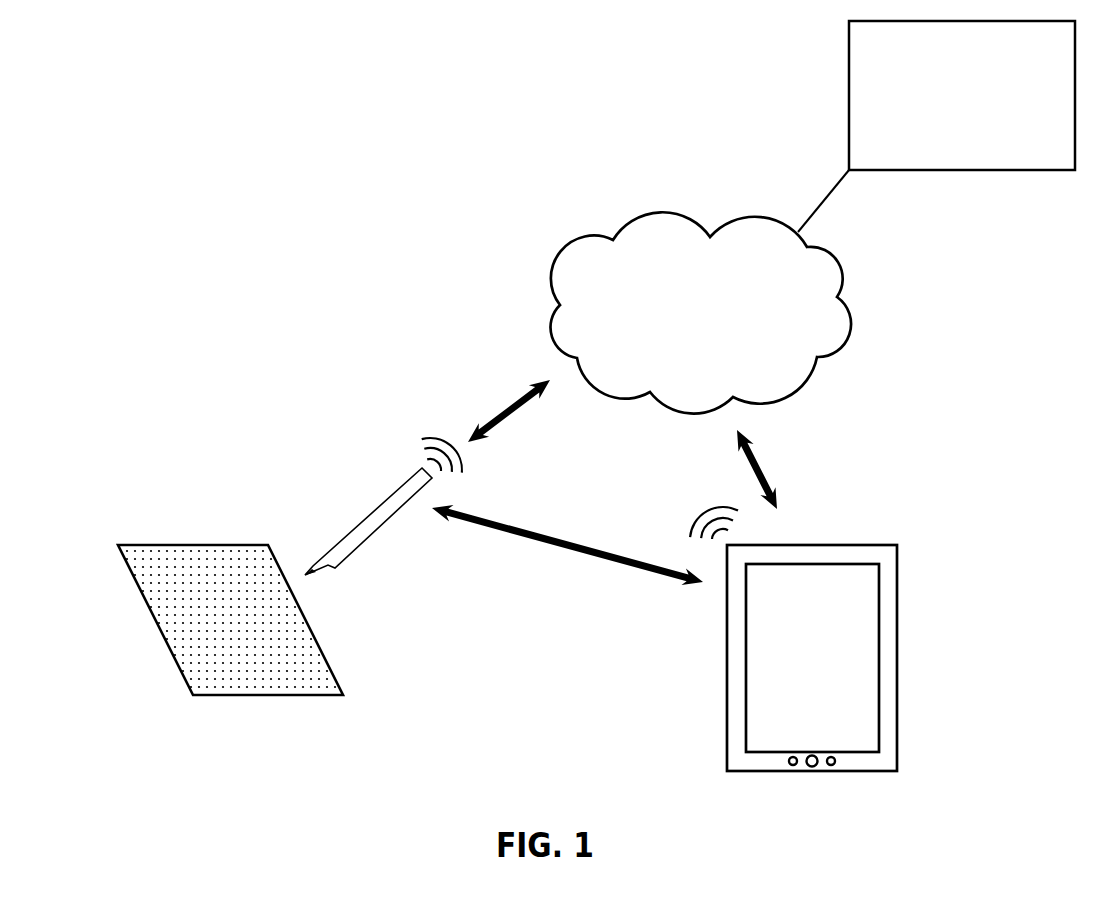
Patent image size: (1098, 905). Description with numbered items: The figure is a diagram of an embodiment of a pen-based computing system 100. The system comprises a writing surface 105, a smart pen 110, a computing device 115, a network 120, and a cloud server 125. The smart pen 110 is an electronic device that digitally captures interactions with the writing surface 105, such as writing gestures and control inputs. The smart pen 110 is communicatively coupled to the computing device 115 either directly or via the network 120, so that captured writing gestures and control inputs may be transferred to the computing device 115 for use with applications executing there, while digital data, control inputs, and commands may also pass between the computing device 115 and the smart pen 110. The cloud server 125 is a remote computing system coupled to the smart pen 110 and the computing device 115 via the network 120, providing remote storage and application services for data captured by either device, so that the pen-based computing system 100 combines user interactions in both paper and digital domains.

The pen-based computing system 100 is at (173, 142).
The writing surface 105 is at (181, 620).
The smart pen 110 is at (378, 505).
The computing device 115 is at (867, 545).
The network 120 is at (680, 340).
The cloud server 125 is at (941, 122).